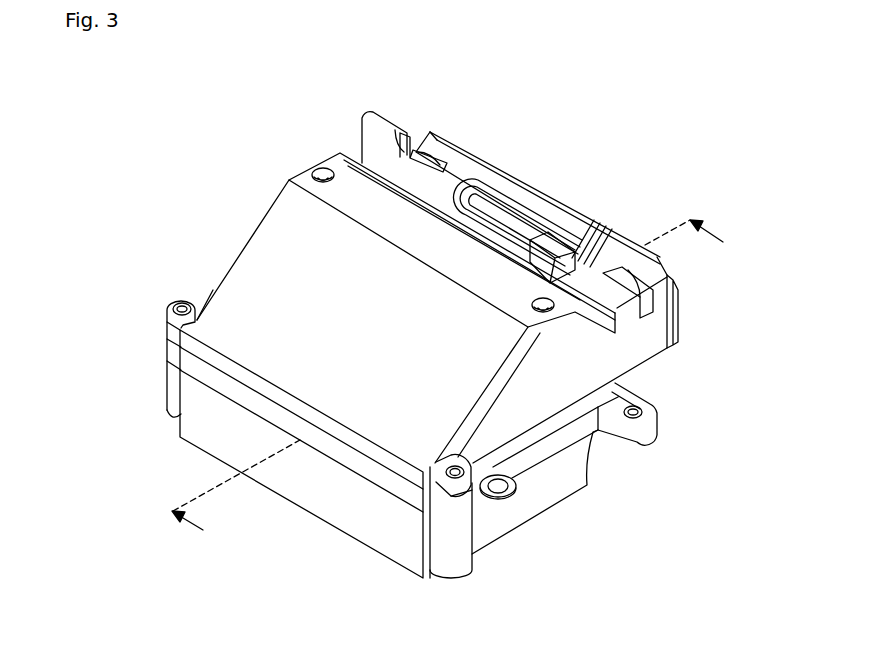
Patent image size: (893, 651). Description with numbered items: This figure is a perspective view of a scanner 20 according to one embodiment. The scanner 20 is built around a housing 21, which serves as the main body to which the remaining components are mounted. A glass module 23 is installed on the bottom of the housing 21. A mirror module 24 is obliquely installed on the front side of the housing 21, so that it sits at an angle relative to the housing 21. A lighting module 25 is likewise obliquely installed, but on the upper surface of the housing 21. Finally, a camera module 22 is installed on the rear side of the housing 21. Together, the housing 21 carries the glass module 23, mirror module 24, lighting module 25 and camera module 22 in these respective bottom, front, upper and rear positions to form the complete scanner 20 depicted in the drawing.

The scanner 20 is at (637, 117).
The housing 21 is at (648, 348).
The camera module 22 is at (533, 186).
The glass module 23 is at (317, 495).
The mirror module 24 is at (245, 253).
The lighting module 25 is at (343, 153).